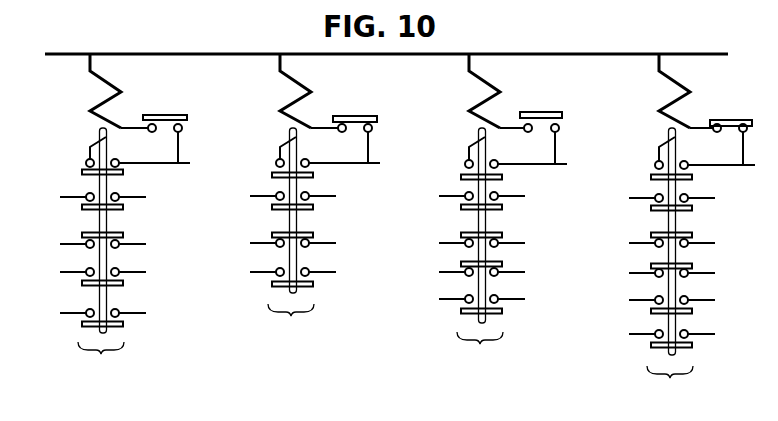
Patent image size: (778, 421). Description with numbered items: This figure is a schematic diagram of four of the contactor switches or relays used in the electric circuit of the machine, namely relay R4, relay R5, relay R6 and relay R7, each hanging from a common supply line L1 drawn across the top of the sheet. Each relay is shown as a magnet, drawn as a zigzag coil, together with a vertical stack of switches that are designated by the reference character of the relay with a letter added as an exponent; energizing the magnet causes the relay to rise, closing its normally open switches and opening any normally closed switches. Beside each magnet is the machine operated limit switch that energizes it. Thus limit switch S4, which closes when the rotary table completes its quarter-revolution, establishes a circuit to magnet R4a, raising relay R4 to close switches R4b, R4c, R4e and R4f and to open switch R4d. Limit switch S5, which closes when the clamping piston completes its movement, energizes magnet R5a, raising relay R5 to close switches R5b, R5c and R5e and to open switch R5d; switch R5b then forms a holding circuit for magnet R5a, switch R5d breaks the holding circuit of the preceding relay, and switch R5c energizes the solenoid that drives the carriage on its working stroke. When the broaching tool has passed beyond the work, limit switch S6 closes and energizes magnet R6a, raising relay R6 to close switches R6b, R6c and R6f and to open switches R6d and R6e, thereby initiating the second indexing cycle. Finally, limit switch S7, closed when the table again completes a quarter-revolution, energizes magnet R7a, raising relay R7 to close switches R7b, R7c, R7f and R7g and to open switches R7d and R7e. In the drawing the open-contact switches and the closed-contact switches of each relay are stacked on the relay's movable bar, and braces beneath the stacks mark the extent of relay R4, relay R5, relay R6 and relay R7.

The line L1 is at (68, 53).
The relay R4 is at (101, 252).
The magnet R4a is at (97, 101).
The switch R4b is at (84, 172).
The switch R4c is at (121, 207).
The switch R4d is at (84, 235).
The switch R4e is at (84, 283).
The switch R4f is at (84, 325).
The limit switch S4 is at (154, 129).
The relay R5 is at (291, 232).
The magnet R5a is at (288, 103).
The switch R5b is at (275, 176).
The switch R5c is at (310, 207).
The switch R5d is at (272, 236).
The switch R5e is at (275, 284).
The limit switch S5 is at (344, 130).
The relay R6 is at (480, 246).
The magnet R6a is at (478, 103).
The switch R6b is at (464, 176).
The switch R6c is at (500, 208).
The switch R6d is at (465, 235).
The switch R6e is at (500, 264).
The switch R6f is at (503, 312).
The limit switch S6 is at (532, 128).
The relay R7 is at (670, 264).
The magnet R7a is at (672, 103).
The switch R7b is at (655, 178).
The switch R7c is at (690, 208).
The switch R7d is at (652, 236).
The switch R7e is at (690, 268).
The switch R7f is at (692, 311).
The switch R7g is at (690, 345).
The limit switch S7 is at (721, 133).